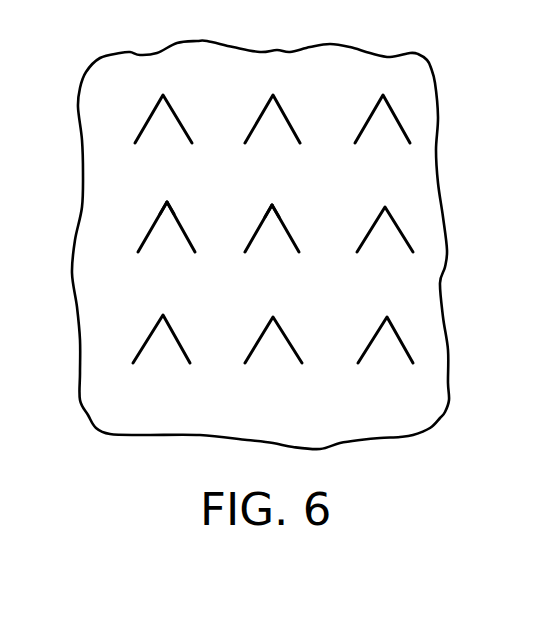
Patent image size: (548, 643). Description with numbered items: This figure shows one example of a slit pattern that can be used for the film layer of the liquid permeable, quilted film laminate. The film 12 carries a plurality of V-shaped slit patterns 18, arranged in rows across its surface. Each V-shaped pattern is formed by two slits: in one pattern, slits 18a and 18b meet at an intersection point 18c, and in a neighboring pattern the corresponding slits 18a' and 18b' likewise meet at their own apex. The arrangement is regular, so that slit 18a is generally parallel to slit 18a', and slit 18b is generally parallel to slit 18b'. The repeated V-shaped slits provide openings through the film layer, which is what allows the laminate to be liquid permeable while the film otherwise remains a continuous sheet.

The substrate 12 is at (345, 416).
The chevron-shaped pattern element 18 is at (306, 333).
The slit 18a is at (134, 214).
The slit 18b is at (205, 213).
The intersection point 18c is at (167, 201).
The slit 18a' is at (232, 253).
The slit 18b' is at (315, 225).